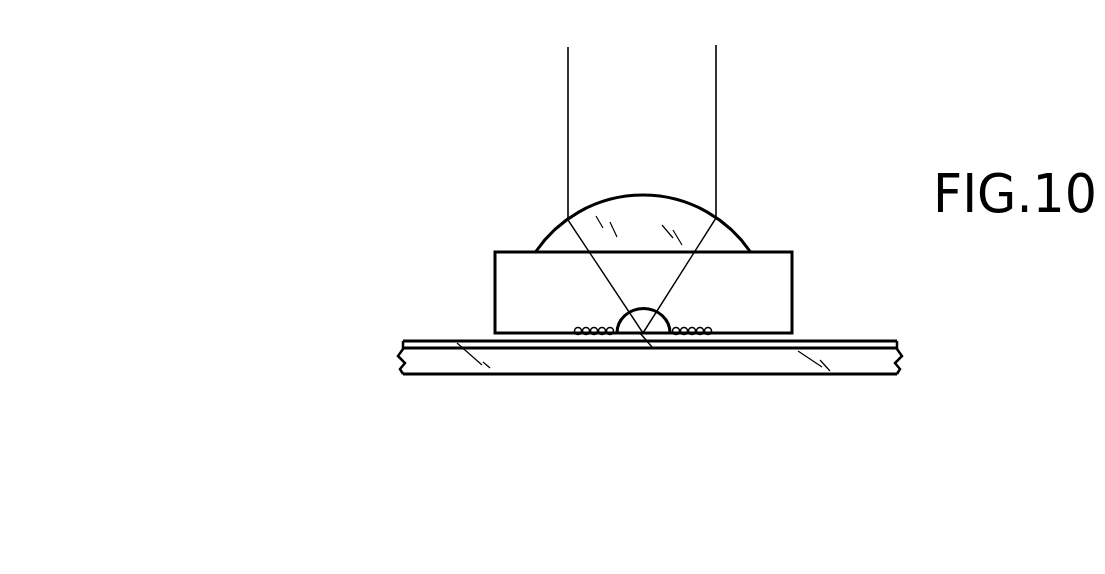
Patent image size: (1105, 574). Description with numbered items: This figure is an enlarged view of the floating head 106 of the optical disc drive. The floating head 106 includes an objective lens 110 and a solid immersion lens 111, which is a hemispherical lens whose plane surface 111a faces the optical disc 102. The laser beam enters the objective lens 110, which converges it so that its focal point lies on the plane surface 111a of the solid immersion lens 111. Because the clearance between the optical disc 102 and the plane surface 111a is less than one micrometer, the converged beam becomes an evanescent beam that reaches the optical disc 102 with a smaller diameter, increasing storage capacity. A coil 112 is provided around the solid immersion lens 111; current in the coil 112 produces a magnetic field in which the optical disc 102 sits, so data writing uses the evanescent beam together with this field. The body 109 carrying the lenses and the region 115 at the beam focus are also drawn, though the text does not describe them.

The floating head 106 is at (487, 221).
The objective lens 110 is at (608, 197).
The sealing resin body 109 is at (771, 249).
The solid immersion lens 111 is at (665, 320).
The plane surface 111a is at (627, 336).
The bonding portion 115 is at (650, 340).
The coil 112 is at (586, 336).
The optical disc 102 is at (887, 297).